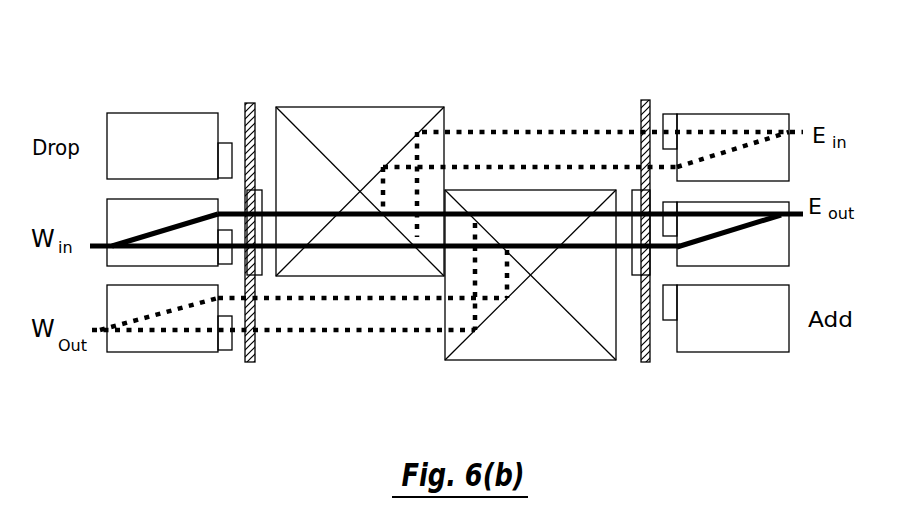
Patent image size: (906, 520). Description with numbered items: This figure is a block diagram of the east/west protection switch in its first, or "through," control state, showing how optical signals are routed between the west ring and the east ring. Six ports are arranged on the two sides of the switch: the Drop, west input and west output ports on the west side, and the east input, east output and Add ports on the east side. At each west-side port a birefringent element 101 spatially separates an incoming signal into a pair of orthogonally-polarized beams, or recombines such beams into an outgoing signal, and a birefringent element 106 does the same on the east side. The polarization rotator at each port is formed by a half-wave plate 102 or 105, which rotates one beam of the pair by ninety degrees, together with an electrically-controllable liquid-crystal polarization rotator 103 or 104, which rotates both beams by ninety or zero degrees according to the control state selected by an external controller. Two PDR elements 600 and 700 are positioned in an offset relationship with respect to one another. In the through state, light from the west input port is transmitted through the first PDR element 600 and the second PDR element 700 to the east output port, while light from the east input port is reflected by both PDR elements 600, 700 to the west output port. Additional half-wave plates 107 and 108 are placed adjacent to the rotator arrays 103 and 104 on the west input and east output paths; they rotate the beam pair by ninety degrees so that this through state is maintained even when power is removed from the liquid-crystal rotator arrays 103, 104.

The birefringent element 101 is at (145, 113).
The half-wave plate 102 is at (228, 143).
The liquid-crystal polarization rotator 103 is at (250, 103).
The liquid-crystal polarization rotator 104 is at (645, 100).
The half-wave plate 105 is at (667, 113).
The birefringent element 106 is at (722, 113).
The half-wave plate 107 is at (262, 197).
The half-wave plate 108 is at (632, 192).
The first PDR element 600 is at (368, 107).
The second PDR element 700 is at (549, 360).